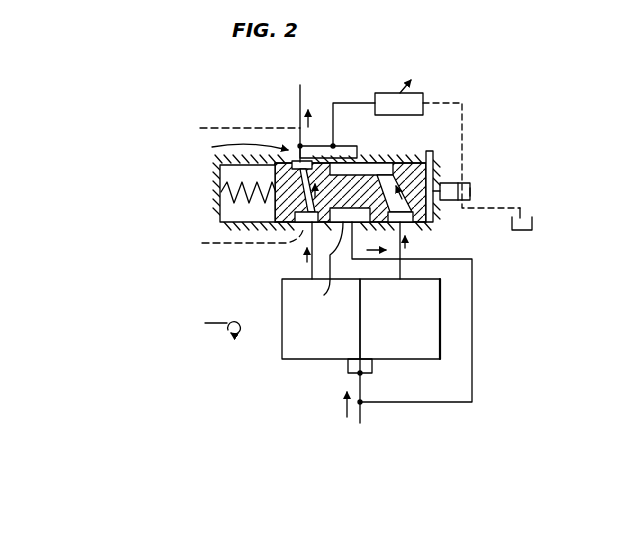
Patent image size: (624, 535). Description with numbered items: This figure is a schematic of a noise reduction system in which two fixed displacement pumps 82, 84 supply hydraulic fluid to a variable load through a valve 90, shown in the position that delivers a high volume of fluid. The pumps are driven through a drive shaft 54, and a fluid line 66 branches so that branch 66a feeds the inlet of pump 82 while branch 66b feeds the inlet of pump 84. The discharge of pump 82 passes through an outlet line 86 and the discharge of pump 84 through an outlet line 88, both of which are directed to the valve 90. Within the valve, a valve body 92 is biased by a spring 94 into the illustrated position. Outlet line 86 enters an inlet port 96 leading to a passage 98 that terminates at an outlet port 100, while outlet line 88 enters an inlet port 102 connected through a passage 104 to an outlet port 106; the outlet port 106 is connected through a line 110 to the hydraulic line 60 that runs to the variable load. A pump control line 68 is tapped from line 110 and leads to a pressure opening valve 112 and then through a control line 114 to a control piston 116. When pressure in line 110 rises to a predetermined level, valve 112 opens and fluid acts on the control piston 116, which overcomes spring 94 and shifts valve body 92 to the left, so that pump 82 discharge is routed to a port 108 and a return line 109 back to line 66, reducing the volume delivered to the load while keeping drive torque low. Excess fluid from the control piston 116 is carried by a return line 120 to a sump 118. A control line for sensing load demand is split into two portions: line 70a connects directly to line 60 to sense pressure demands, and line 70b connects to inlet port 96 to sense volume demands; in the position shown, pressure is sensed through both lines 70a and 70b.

The drive shaft 54 is at (214, 322).
The hydraulic line 60 is at (300, 85).
The fluid line 66 is at (363, 415).
The branch line 66a is at (348, 365).
The branch line 66b is at (373, 365).
The pump control line 68 is at (350, 103).
The control line portion 70a is at (275, 127).
The control line portion 70b is at (222, 242).
The fixed displacement pump 82 is at (282, 308).
The fixed displacement pump 84 is at (432, 305).
The outlet line 86 is at (311, 276).
The outlet line 88 is at (402, 253).
The valve 90 is at (234, 148).
The valve body 92 is at (410, 172).
The spring 94 is at (218, 186).
The inlet port 96 is at (307, 223).
The passage 98 is at (274, 173).
The outlet port 100 is at (357, 152).
The inlet port 102 is at (412, 222).
The passage 104 is at (438, 178).
The outlet port 106 is at (403, 157).
The port 108 is at (340, 262).
The return line 109 is at (474, 339).
The line 110 is at (343, 146).
The pressure opening valve 112 is at (410, 95).
The control line 114 is at (463, 103).
The control piston 116 is at (470, 192).
The sump 118 is at (526, 231).
The return line 120 is at (521, 212).